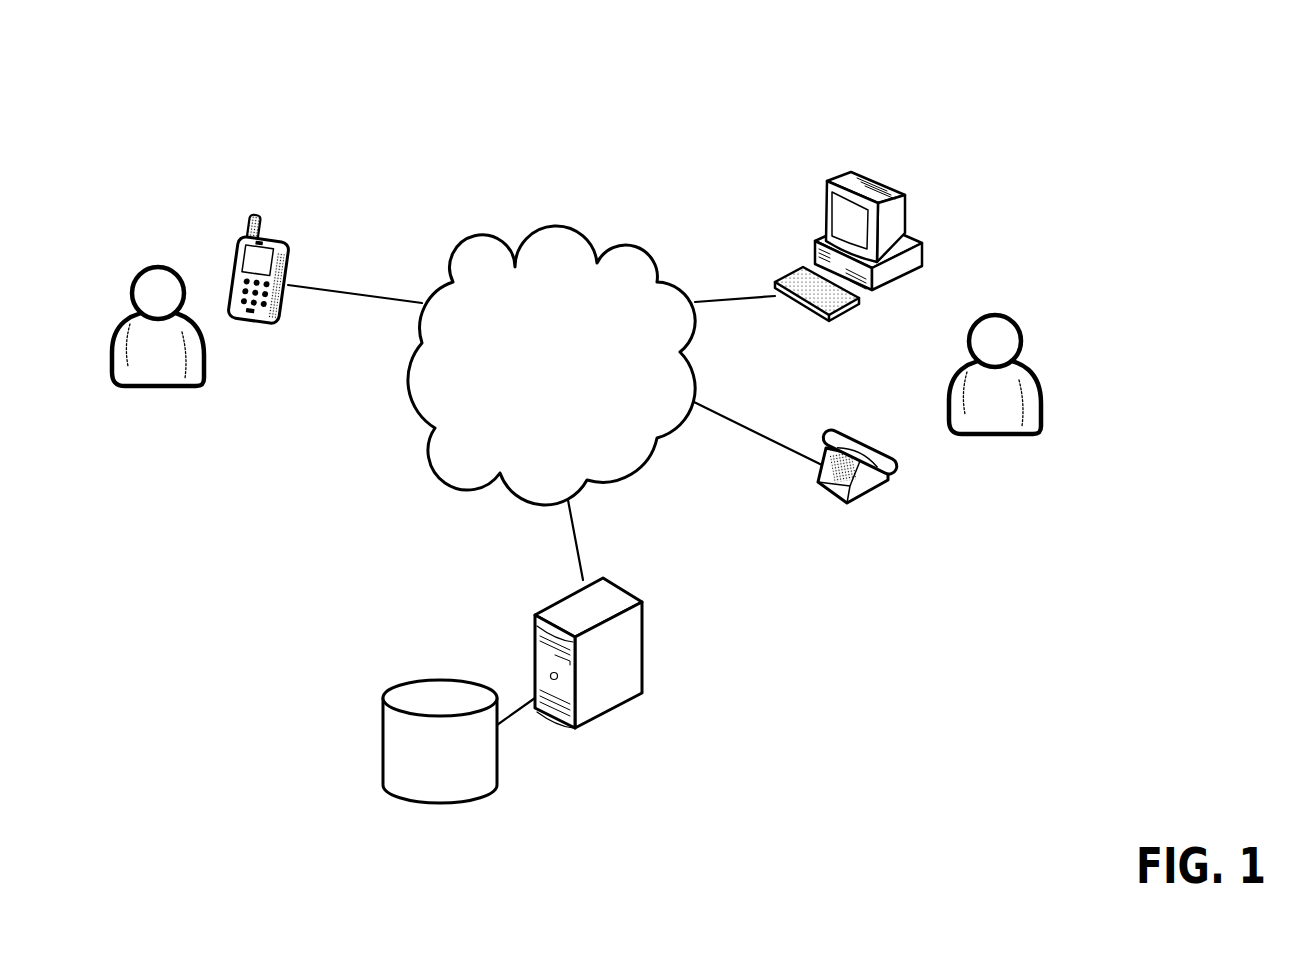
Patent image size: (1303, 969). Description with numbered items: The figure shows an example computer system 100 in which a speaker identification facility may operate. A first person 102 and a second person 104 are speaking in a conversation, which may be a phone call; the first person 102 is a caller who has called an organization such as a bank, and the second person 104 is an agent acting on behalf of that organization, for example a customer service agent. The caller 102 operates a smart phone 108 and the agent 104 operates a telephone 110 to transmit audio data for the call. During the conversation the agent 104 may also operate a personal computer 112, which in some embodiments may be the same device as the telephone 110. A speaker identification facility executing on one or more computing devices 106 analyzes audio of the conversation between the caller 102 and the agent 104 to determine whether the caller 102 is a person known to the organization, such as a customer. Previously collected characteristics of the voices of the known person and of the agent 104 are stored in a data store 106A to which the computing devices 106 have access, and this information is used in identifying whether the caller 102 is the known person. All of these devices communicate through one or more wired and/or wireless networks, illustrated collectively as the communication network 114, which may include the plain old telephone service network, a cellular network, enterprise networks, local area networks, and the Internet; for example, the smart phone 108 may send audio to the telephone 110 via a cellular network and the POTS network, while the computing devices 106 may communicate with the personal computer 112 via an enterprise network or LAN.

The computer system 100 is at (1160, 92).
The first person 102 is at (103, 307).
The second person 104 is at (1045, 350).
The computing devices 106 is at (657, 618).
The data store 106A is at (412, 769).
The smart phone 108 is at (287, 230).
The telephone 110 is at (903, 495).
The personal computer 112 is at (932, 202).
The communication network 114 is at (573, 363).